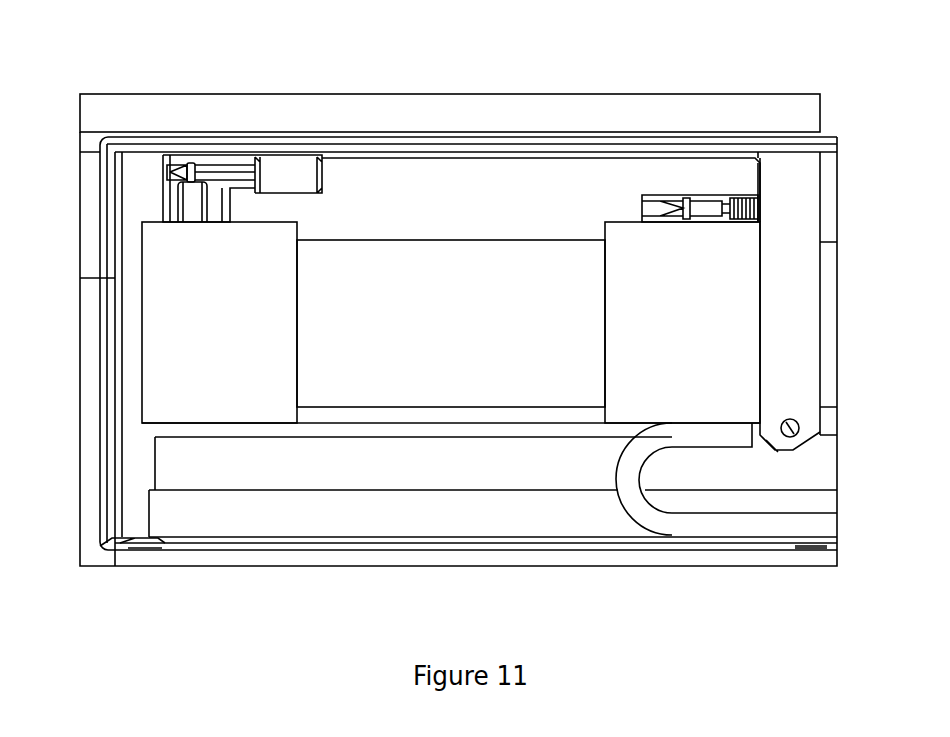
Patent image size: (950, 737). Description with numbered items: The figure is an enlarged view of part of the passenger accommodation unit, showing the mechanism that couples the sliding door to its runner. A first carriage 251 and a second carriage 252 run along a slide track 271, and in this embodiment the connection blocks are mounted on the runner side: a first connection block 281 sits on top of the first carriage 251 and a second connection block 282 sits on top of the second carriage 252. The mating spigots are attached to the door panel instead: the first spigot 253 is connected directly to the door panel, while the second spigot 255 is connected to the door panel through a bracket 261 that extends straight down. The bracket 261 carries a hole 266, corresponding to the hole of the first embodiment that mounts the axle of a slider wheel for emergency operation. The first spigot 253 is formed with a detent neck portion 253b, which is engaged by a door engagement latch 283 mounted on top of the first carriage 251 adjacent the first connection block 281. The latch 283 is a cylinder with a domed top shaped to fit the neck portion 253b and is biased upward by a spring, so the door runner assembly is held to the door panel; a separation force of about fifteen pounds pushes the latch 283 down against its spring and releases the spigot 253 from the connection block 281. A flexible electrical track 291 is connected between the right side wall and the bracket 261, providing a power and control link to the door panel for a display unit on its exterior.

The first carriage 251 is at (230, 329).
The second carriage 252 is at (700, 329).
The first spigot 253 is at (237, 173).
The detent neck portion 253b is at (192, 168).
The second spigot 255 is at (755, 193).
The bracket 261 is at (797, 220).
The hole 266 is at (798, 428).
The slide track 271 is at (467, 329).
The first connection block 281 is at (208, 160).
The second connection block 282 is at (655, 200).
The door engagement latch 283 is at (195, 200).
The flexible electrical track 291 is at (695, 527).